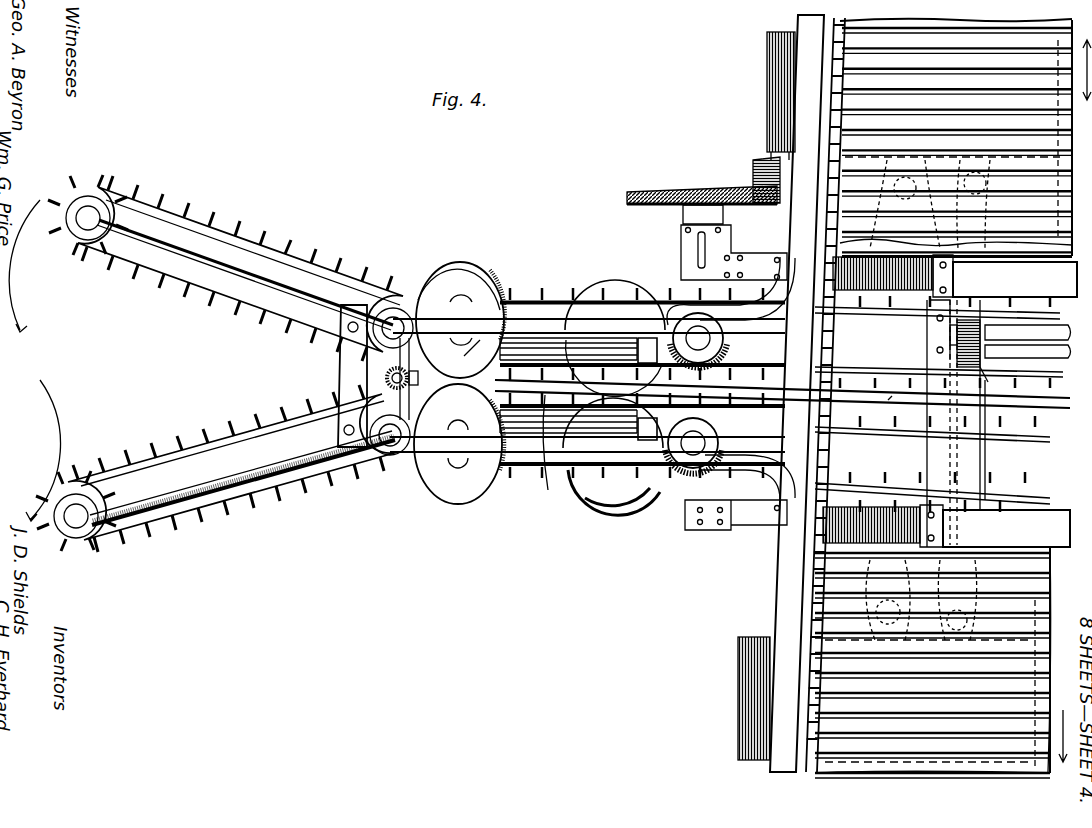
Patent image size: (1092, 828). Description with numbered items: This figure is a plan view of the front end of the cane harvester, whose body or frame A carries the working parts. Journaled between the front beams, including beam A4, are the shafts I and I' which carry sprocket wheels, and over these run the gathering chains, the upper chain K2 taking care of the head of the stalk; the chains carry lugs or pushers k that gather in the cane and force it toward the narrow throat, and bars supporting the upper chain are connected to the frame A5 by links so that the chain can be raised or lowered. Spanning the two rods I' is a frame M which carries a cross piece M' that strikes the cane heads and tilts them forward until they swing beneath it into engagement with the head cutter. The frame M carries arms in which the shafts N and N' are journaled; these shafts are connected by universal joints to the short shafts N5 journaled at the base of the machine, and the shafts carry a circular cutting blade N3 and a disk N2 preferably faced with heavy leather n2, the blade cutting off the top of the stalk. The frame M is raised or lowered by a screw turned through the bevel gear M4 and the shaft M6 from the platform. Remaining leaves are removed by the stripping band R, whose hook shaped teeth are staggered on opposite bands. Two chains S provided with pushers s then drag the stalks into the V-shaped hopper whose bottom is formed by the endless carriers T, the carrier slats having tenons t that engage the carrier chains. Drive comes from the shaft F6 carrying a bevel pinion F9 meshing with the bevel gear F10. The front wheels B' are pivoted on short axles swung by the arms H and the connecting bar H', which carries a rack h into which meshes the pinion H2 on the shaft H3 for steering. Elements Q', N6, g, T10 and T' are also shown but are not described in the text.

The shaft I is at (82, 353).
The upper chain K2 is at (220, 236).
The beam A4 is at (262, 272).
The lugs or pushers k is at (340, 262).
The cross piece M' is at (349, 376).
The shaft I' is at (577, 381).
The shaft N' is at (460, 320).
The circular cutting blade N3 is at (475, 272).
The bar Q' is at (642, 402).
The heavy leather facing n2 is at (562, 300).
The disk N2 is at (600, 282).
The crank wheel N6 is at (690, 325).
The bevel gear M4 is at (460, 344).
The frame M is at (399, 392).
The shaft M6 is at (478, 384).
The shaft N is at (459, 451).
The stripping band R is at (548, 490).
The short shaft N5 is at (690, 452).
The frame A5 is at (815, 73).
The front wheel B' is at (753, 396).
The shaft F6 is at (768, 158).
The bevel gear F10 is at (668, 190).
The bevel pinion F9 is at (753, 180).
The tenon t is at (1066, 110).
The endless carrier T is at (962, 138).
The body or frame A is at (955, 276).
The bolt g is at (863, 297).
The pusher s is at (888, 400).
The chain S is at (895, 370).
The pinion H2 is at (977, 338).
The shaft H3 is at (1028, 345).
The rack h is at (980, 370).
The connecting bar H' is at (994, 440).
The box T10 is at (1040, 545).
The arm H is at (932, 663).
The roll edge T' is at (1056, 660).